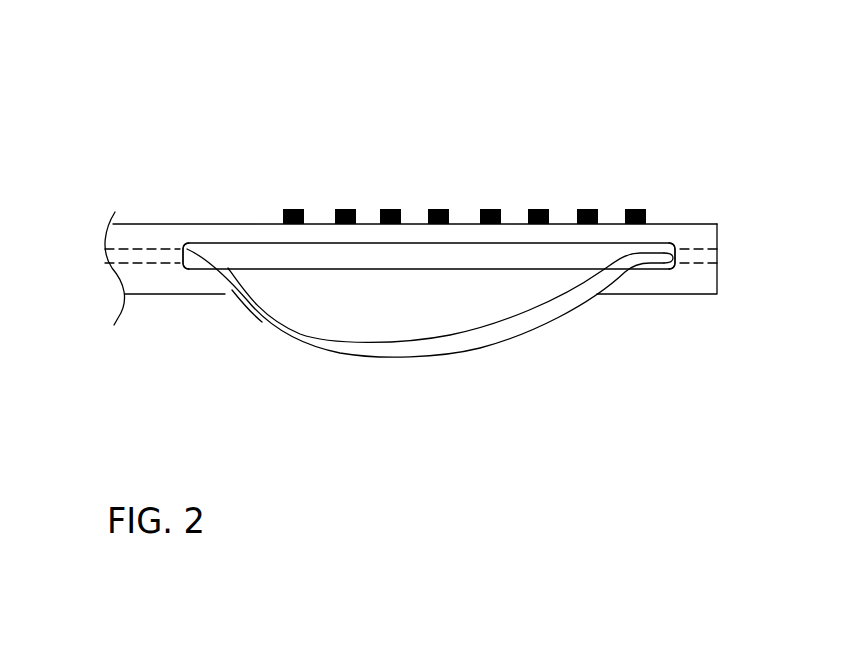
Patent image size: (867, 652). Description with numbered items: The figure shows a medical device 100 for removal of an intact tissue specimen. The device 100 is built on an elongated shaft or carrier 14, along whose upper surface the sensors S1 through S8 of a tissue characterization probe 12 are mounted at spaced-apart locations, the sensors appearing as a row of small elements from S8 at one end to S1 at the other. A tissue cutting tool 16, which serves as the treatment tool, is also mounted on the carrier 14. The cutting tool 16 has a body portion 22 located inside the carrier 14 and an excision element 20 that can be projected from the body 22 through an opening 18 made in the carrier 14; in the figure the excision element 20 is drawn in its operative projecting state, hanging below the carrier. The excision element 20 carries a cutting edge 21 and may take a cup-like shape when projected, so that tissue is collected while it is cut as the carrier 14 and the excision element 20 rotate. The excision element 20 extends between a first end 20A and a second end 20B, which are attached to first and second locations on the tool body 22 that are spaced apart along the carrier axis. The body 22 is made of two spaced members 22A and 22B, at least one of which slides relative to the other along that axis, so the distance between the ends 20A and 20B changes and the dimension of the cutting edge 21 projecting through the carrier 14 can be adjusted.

The medical device 100 is at (167, 100).
The tissue characterization probe 12 is at (637, 196).
The sensor S1 is at (637, 203).
The sensor S8 is at (292, 208).
The elongated shaft/carrier 14 is at (161, 237).
The tissue cutting tool 16 is at (226, 330).
The opening 18 is at (323, 257).
The excision element 20 is at (402, 328).
The first end of excision element 20A is at (682, 254).
The second end of excision element 20B is at (177, 252).
The cutting edge 21 is at (503, 328).
The body portion 22 is at (157, 290).
The first spaced member 22A is at (692, 248).
The second spaced member 22B is at (122, 250).